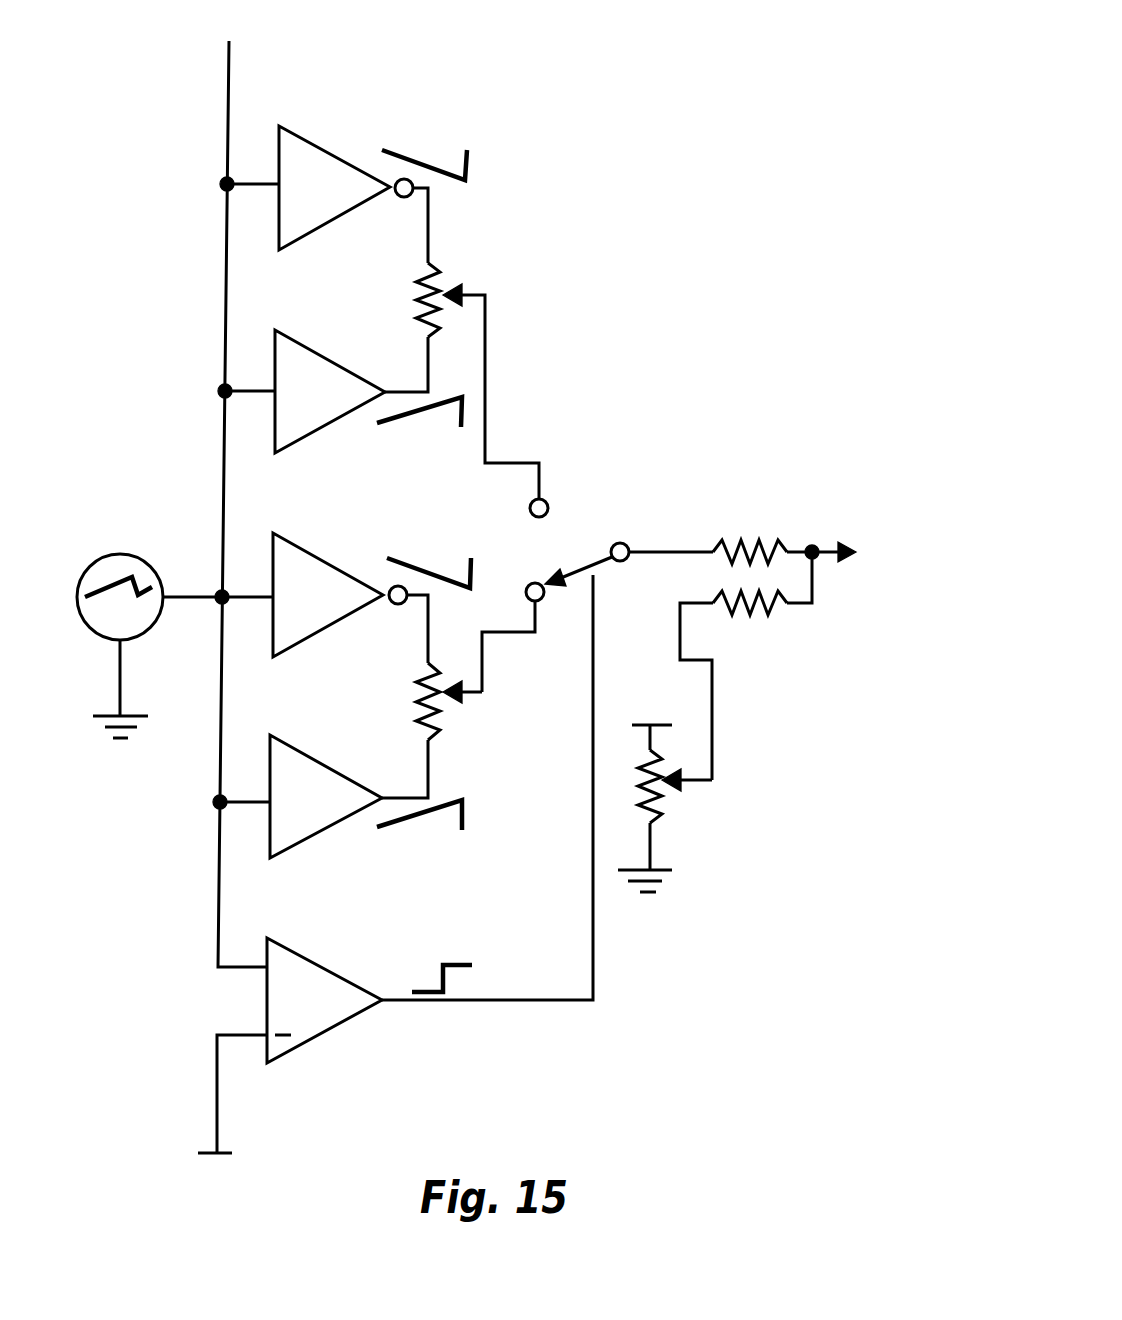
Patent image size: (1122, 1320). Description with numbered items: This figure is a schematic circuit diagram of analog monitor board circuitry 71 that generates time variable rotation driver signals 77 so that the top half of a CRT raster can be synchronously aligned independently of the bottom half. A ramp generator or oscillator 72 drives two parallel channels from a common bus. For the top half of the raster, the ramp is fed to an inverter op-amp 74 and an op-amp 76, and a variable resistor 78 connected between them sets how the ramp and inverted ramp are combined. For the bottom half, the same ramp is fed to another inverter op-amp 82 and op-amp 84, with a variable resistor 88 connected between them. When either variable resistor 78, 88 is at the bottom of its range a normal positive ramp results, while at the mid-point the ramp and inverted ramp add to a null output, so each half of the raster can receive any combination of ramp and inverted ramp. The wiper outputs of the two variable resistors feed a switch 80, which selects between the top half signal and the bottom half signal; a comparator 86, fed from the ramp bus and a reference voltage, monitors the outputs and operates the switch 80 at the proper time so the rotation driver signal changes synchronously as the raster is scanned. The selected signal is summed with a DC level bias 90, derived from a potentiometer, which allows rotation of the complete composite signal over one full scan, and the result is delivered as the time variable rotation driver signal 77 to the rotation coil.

The analog monitor board circuitry 71 is at (776, 168).
The ramp generator or oscillator 72 is at (148, 562).
The inverter op-amp 74 is at (313, 142).
The op-amp 76 is at (300, 340).
The time variable rotation driver signal 77 is at (878, 663).
The variable resistor 78 is at (467, 288).
The switch 80 is at (610, 542).
The inverter op-amp 82 is at (352, 572).
The op-amp 84 is at (297, 745).
The comparator 86 is at (330, 970).
The variable resistor 88 is at (462, 693).
The DC level bias 90 is at (695, 783).